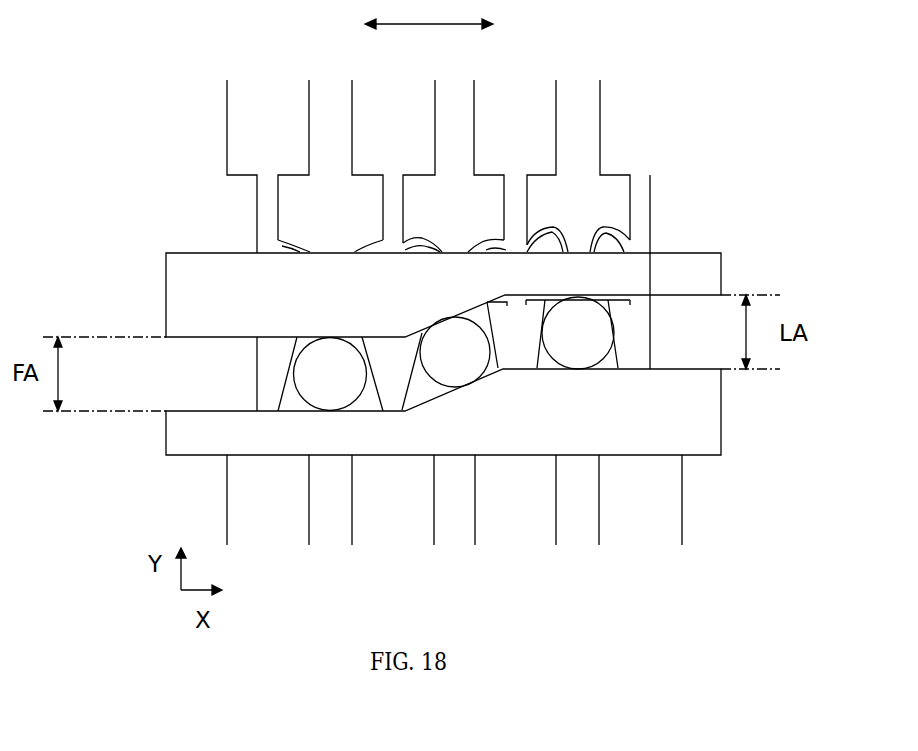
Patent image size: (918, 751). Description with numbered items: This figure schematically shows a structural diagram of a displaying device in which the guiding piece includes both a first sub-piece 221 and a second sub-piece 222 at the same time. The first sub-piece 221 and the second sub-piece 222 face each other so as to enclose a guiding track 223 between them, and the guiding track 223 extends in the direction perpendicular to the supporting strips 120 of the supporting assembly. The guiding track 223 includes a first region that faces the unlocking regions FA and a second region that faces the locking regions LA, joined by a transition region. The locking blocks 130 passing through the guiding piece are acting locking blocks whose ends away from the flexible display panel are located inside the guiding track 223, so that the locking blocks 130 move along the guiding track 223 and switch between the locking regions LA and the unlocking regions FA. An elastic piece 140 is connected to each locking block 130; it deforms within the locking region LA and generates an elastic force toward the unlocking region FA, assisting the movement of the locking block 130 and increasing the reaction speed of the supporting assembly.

The supporting strip 120 is at (258, 105).
The elastic piece 140 is at (605, 230).
The second sub-piece 222 is at (188, 293).
The guiding track 223 is at (184, 362).
The locking block 130 is at (317, 395).
The first sub-piece 221 is at (188, 428).